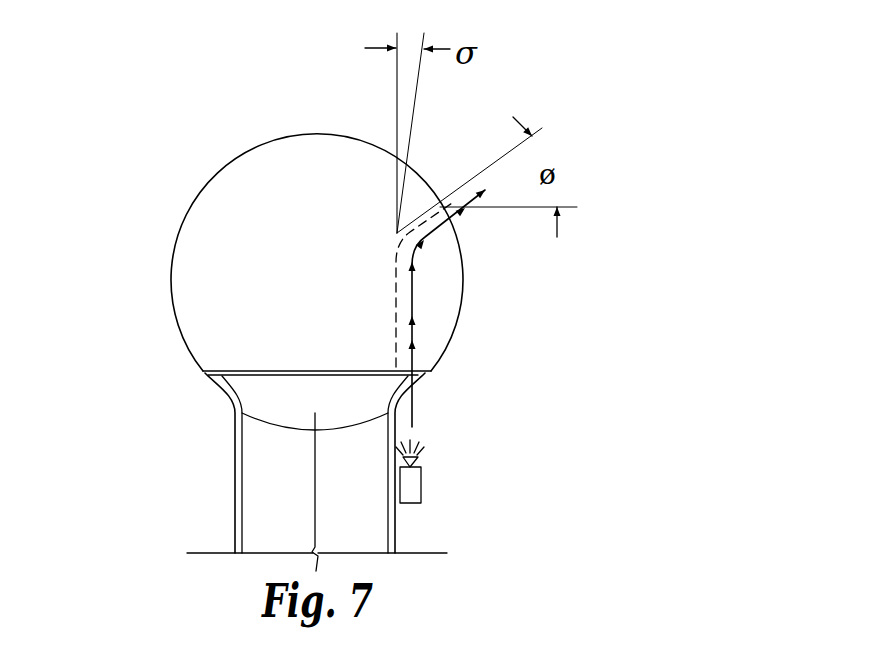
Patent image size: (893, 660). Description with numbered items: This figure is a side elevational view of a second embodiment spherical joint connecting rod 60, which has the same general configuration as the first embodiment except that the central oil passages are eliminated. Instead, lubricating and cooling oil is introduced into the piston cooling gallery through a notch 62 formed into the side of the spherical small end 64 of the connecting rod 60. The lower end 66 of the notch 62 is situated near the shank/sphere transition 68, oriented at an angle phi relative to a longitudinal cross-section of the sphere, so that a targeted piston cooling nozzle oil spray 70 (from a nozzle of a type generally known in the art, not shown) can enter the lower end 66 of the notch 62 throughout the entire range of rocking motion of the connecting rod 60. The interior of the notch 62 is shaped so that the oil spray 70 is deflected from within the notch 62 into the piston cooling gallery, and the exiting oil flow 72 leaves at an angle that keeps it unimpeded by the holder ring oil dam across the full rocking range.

The connecting rod 60 is at (237, 110).
The notch 62 is at (396, 268).
The spherical small end 64 is at (177, 238).
The lower end of the notch 66 is at (390, 419).
The shank/sphere transition 68 is at (403, 393).
The piston cooling nozzle oil spray 70 is at (410, 418).
The exiting oil flow 72 is at (450, 218).